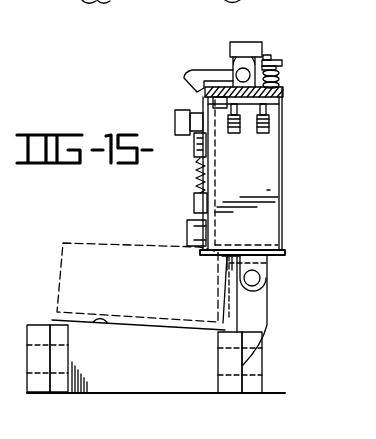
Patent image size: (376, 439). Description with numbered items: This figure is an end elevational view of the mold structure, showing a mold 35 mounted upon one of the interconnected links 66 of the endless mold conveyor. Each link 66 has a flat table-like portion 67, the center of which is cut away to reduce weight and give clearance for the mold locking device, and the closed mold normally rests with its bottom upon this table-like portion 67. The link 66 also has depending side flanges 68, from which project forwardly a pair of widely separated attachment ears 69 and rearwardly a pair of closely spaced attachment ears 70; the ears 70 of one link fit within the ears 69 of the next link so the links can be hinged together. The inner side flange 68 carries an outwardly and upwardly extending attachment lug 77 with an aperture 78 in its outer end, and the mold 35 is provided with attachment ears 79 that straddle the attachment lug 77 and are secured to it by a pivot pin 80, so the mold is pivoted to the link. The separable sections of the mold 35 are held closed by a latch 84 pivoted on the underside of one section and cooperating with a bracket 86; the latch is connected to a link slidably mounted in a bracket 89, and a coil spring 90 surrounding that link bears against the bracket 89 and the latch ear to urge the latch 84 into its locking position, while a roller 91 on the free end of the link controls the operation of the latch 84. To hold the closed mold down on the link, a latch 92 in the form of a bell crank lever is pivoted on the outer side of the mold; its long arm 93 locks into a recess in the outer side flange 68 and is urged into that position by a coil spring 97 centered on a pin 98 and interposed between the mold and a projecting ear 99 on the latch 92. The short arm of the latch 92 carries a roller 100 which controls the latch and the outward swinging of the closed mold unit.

The mold 35 is at (293, 144).
The roller 100 is at (250, 42).
The latch 92 is at (226, 54).
The long arm 93 is at (183, 80).
The projecting ear 99 is at (282, 64).
The pin 98 is at (270, 58).
The coil spring 97 is at (280, 80).
The side flange 68 is at (200, 108).
The roller 91 is at (175, 118).
The coil spring 90 is at (200, 176).
The bracket 89 is at (198, 160).
The latch 84 is at (194, 213).
The bracket 86 is at (190, 227).
The table-like portion 67 is at (107, 322).
The attachment ears 79 is at (270, 257).
The pivot pin 80 is at (261, 278).
The apertures 78 is at (268, 296).
The attachment lugs 77 is at (265, 318).
The attachment ears 69 is at (38, 393).
The attachment ears 70 is at (55, 393).
The links 66 is at (99, 394).